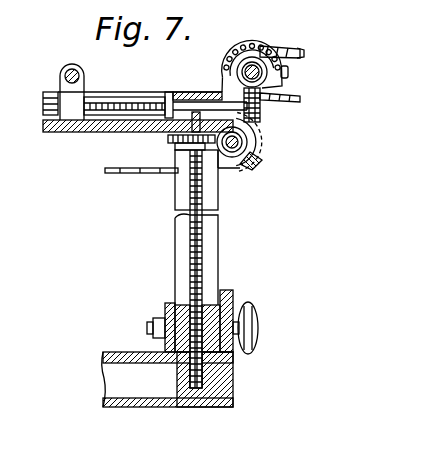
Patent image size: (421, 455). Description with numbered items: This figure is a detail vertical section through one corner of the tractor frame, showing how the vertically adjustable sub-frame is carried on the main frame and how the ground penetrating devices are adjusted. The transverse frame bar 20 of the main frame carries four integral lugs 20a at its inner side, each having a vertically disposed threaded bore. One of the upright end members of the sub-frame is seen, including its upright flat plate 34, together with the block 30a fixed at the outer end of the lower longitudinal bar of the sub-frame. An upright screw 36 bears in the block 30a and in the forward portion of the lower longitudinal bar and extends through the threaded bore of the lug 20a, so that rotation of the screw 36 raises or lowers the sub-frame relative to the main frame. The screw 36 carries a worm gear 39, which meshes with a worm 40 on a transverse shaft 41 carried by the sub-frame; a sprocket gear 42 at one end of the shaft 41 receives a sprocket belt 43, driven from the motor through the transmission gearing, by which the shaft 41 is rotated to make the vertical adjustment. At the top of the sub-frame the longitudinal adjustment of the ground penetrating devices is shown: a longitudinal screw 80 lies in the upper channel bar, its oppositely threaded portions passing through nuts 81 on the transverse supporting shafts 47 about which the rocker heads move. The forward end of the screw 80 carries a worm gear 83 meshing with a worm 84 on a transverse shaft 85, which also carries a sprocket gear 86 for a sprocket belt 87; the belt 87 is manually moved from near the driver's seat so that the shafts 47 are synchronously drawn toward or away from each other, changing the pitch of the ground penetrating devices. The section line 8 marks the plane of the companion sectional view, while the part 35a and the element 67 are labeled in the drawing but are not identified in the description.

The transverse supporting shaft 47 is at (80, 52).
The nut 81 is at (78, 100).
The longitudinal screw 80 is at (143, 100).
The transverse shaft 85 is at (272, 32).
The sprocket gear 86 is at (276, 48).
The sprocket belt 87 is at (302, 53).
The worm 84 is at (289, 72).
The chain 67 is at (262, 97).
The worm gear 83 is at (262, 106).
The transverse shaft 41 is at (248, 141).
The worm 40 is at (265, 150).
The sprocket gear 42 is at (243, 163).
The worm gear 39 is at (168, 143).
The sprocket belt 43 is at (116, 173).
The upright flat plate 34 is at (220, 240).
The upright screw 36 is at (190, 232).
The clamp jaw 35a is at (165, 310).
The integral lug 20a is at (233, 303).
The section line 8 is at (140, 334).
The transverse frame bar 20 is at (235, 378).
The block 30a is at (186, 390).